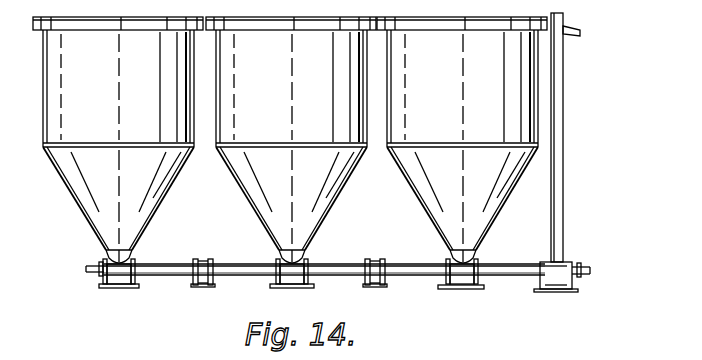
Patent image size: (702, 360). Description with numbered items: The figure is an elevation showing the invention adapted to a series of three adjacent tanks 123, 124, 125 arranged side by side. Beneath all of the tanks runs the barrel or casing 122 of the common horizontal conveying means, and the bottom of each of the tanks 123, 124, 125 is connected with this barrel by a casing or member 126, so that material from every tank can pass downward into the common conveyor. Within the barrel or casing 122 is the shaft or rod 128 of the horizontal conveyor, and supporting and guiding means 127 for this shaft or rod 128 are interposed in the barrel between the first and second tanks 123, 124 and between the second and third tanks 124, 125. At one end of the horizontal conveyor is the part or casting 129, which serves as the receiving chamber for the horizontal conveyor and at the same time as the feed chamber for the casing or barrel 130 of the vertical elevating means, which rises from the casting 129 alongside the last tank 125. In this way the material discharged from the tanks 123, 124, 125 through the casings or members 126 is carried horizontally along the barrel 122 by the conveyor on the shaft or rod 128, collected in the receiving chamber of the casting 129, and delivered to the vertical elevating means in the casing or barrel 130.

The barrel or casing of the common horizontal conveying means 122 is at (185, 263).
The tank 123 is at (118, 140).
The tank 124 is at (291, 140).
The tank 125 is at (462, 140).
The casing or member 126 is at (136, 258).
The supporting and guiding means 127 is at (197, 287).
The shaft or rod of the horizontal conveyor 128 is at (95, 268).
The part or casting 129 is at (545, 289).
The casing or barrel of the vertical elevating means 130 is at (563, 143).